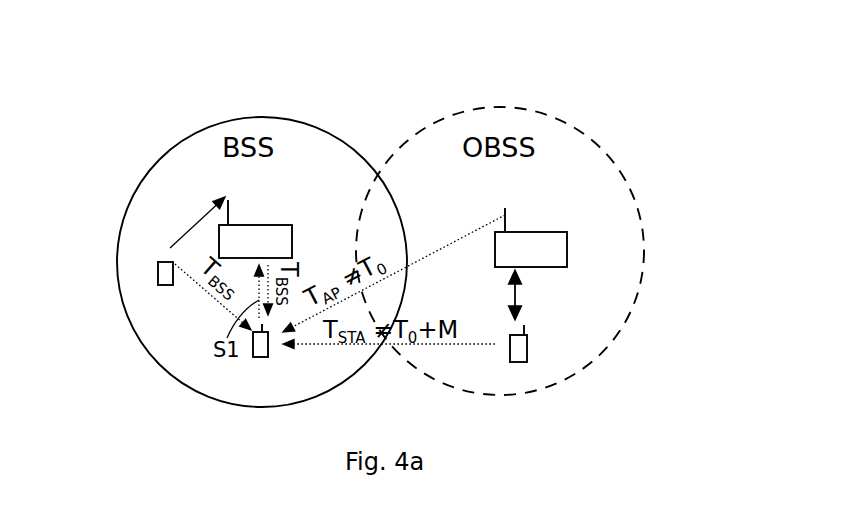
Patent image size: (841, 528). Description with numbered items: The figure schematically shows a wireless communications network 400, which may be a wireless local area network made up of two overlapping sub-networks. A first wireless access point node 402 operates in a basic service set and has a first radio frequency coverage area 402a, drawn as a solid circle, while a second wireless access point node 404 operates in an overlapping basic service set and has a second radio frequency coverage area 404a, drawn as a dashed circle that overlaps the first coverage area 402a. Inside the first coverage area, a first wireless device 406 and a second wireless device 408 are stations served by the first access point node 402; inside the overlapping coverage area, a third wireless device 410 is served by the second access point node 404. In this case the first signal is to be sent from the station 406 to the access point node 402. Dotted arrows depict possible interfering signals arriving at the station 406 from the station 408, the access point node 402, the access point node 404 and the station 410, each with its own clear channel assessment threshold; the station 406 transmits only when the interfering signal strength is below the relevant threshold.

The wireless communications network 400 is at (325, 91).
The first wireless Access Point node 402 is at (257, 225).
The first radio frequency coverage area 402a is at (118, 283).
The second wireless Access Point node 404 is at (530, 232).
The second radio frequency coverage area 404a is at (613, 168).
The first wireless device 406 is at (262, 358).
The second wireless device 408 is at (165, 285).
The third wireless device 410 is at (567, 333).